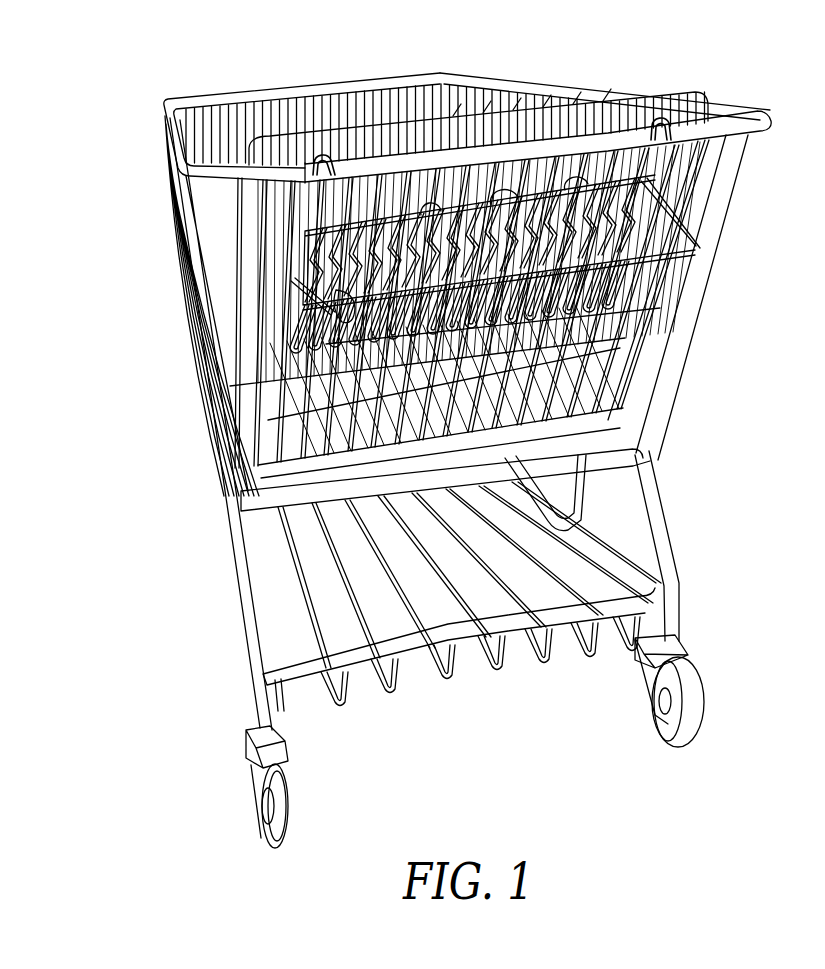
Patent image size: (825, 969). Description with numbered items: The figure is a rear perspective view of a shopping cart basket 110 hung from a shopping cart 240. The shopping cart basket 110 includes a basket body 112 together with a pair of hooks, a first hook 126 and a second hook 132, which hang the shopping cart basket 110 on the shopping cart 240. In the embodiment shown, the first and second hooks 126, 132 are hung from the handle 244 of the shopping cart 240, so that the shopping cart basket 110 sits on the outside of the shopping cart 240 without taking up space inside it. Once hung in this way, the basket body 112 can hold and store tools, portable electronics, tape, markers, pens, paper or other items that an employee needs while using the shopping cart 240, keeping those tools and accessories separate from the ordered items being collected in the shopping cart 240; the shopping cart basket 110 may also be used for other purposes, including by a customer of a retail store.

The shopping cart basket 110 is at (741, 219).
The basket body 112 is at (667, 280).
The first hook 126 is at (320, 152).
The second hook 132 is at (660, 114).
The shopping cart 240 is at (177, 90).
The handle 244 is at (576, 135).